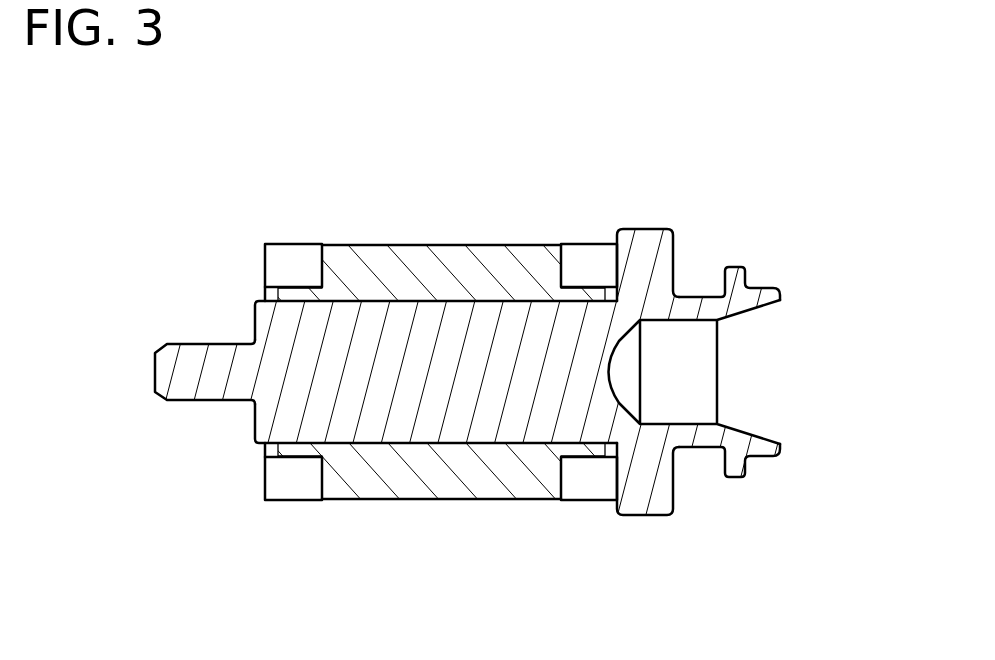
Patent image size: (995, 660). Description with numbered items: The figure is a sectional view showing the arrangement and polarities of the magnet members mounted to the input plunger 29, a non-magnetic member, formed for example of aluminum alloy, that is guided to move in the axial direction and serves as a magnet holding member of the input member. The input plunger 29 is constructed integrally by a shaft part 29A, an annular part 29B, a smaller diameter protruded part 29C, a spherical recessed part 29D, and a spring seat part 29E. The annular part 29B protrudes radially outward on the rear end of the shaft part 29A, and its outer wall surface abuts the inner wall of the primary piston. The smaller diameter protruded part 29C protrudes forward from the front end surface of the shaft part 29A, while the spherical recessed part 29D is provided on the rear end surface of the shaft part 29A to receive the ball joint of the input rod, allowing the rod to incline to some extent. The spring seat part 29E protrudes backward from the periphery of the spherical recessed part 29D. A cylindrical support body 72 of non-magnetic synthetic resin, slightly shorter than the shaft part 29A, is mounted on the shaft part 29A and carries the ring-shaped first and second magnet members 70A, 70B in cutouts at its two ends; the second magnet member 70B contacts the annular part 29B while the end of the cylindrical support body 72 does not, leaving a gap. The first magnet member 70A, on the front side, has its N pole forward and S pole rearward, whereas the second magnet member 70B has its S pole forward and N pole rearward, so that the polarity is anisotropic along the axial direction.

The input plunger 29 is at (475, 410).
The shaft part 29A is at (397, 410).
The annular part 29B is at (643, 497).
The smaller diameter protruded part 29C is at (233, 386).
The spherical recessed part 29D is at (618, 398).
The spring seat part 29E is at (733, 478).
The first magnet member 70A is at (298, 256).
The second magnet member 70B is at (597, 257).
The cylindrical support body 72 is at (448, 256).